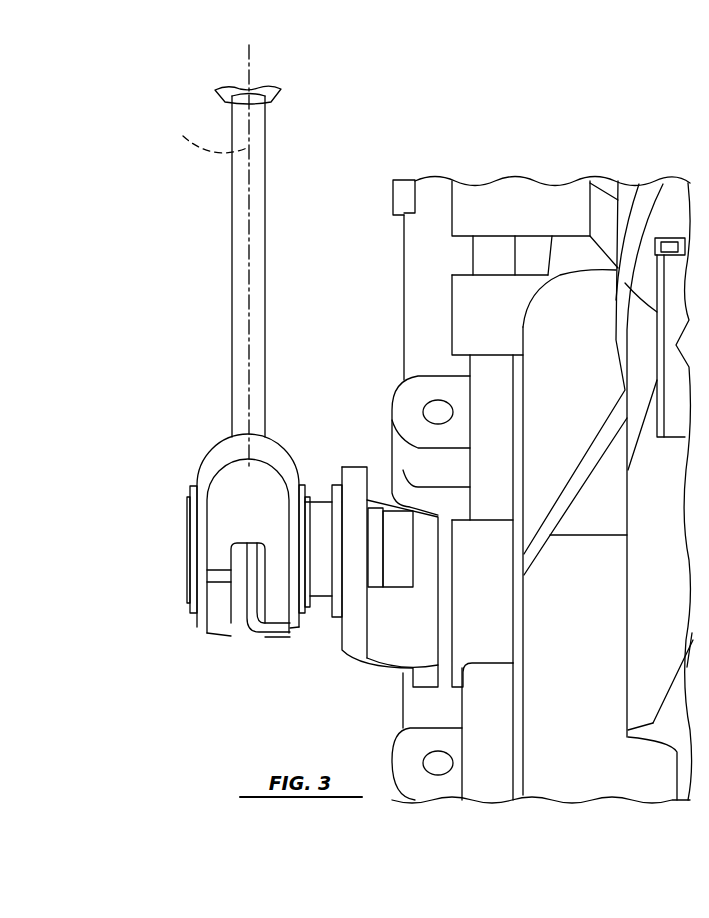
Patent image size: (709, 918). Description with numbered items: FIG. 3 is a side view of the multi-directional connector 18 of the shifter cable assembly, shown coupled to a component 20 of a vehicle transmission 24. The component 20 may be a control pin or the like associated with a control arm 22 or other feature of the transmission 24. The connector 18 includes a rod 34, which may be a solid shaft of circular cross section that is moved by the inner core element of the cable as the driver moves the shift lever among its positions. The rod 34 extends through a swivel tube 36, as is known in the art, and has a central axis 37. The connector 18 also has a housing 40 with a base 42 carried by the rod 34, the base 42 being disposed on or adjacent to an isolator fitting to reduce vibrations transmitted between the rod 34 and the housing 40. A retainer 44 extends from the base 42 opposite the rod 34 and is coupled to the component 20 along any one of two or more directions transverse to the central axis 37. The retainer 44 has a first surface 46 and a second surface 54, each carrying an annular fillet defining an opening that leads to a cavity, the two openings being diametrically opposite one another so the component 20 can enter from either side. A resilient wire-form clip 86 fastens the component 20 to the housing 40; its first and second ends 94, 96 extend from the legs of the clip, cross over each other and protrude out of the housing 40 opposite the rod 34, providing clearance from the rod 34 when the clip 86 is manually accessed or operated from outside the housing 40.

The multi-directional connector 18 is at (222, 372).
The component 20 is at (504, 490).
The control arm 22 is at (360, 467).
The vehicle transmission 24 is at (422, 240).
The rod 34 is at (256, 191).
The swivel tube 36 is at (276, 102).
The central axis 37 is at (203, 134).
The housing 40 is at (219, 559).
The base 42 is at (213, 450).
The retainer 44 is at (200, 626).
The first surface 46 is at (191, 497).
The second surface 54 is at (305, 499).
The resilient clip 86 is at (247, 630).
The first end 94 is at (290, 639).
The second end 96 is at (207, 589).